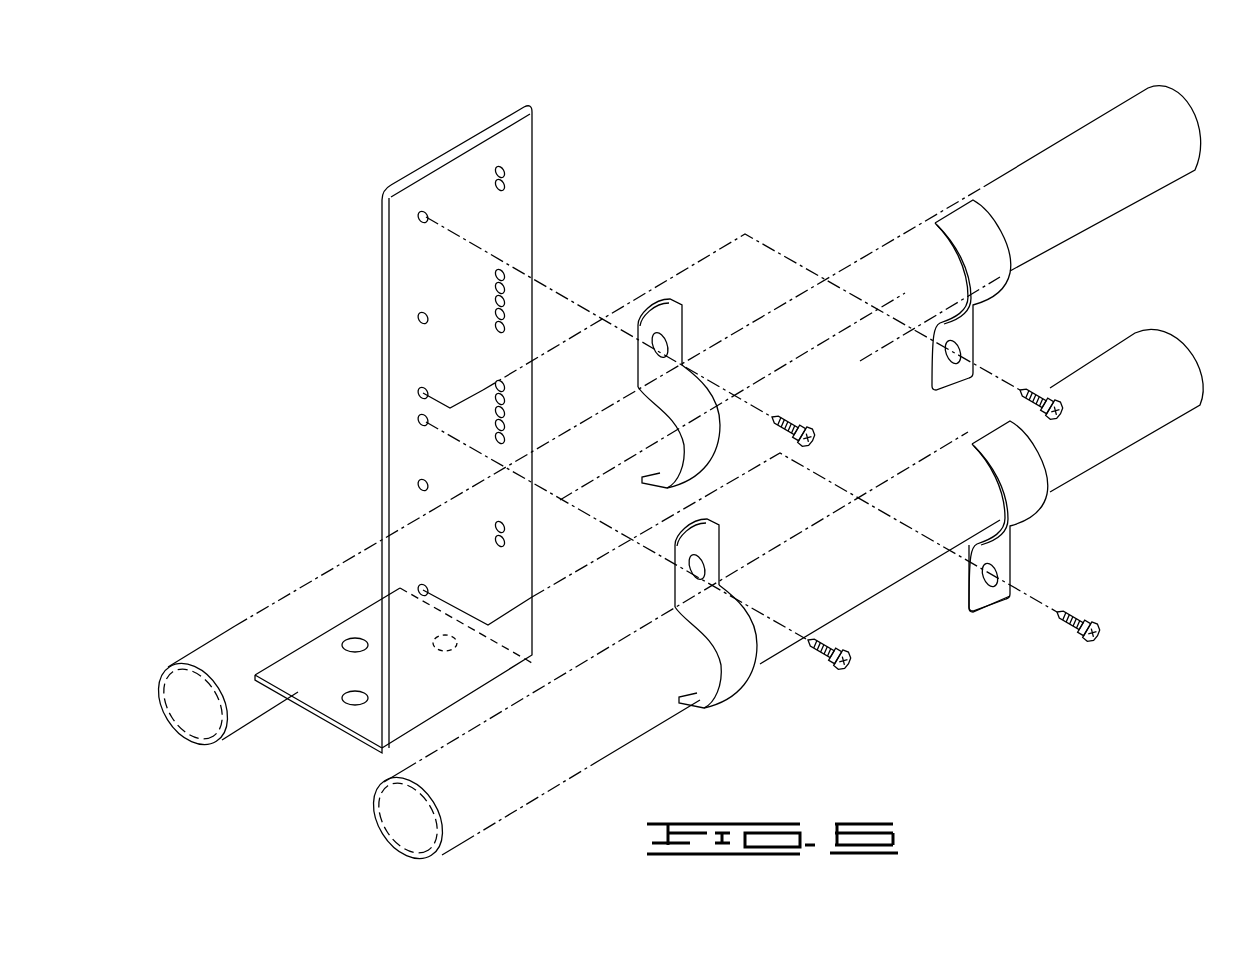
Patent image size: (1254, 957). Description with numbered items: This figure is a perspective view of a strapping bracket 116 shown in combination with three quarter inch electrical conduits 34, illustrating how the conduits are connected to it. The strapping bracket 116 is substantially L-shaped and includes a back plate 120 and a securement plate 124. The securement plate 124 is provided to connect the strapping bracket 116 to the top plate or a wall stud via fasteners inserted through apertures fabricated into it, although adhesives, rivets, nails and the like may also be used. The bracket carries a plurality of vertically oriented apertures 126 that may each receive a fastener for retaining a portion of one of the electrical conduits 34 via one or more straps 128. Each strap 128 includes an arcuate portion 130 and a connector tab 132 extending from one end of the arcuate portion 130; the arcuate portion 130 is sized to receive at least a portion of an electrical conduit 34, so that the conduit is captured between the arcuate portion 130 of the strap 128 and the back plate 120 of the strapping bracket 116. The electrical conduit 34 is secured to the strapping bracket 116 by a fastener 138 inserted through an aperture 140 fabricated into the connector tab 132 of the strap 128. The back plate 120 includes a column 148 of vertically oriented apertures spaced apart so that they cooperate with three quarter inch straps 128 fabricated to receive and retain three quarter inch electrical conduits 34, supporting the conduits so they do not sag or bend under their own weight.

The electrical conduit 34 is at (275, 622).
The strapping bracket 116 is at (318, 178).
The back plate 120 is at (525, 237).
The securement plate 124 is at (355, 717).
The vertically oriented apertures 126 is at (510, 172).
The strap 128 is at (935, 198).
The arcuate portion 130 is at (1040, 473).
The connector tab 132 is at (990, 609).
The fastener 138 is at (1057, 410).
The aperture 140 is at (958, 348).
The column of vertically oriented apertures 148 is at (419, 204).